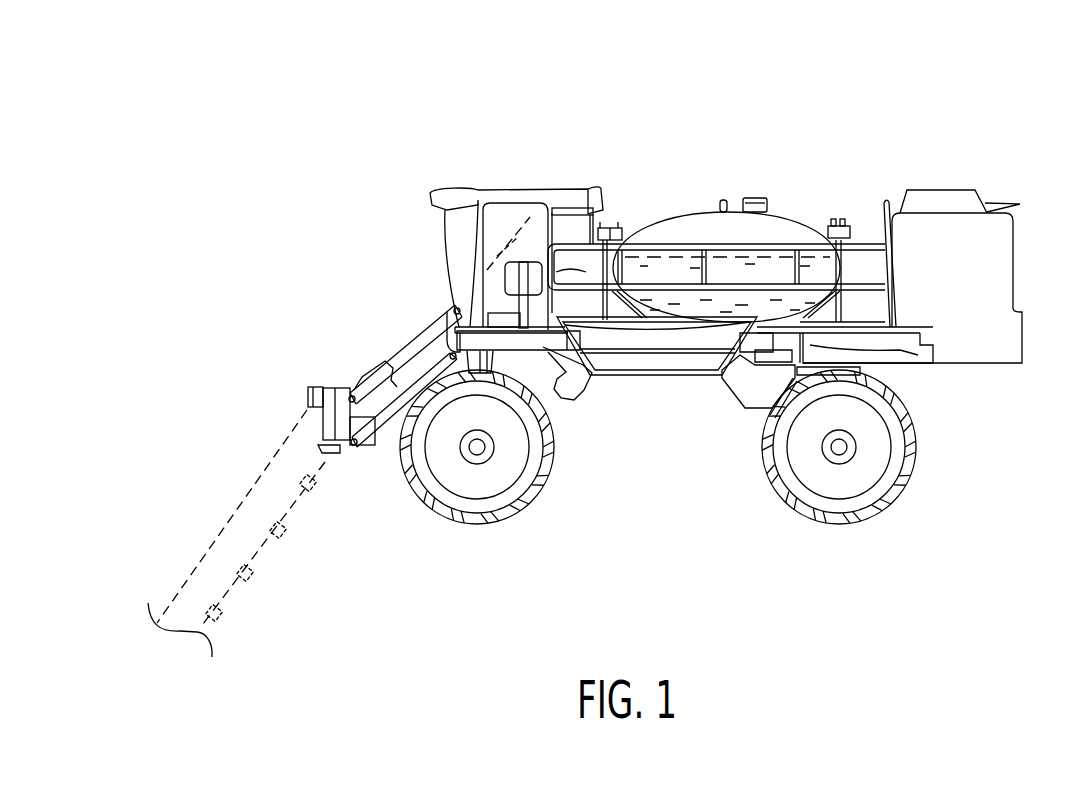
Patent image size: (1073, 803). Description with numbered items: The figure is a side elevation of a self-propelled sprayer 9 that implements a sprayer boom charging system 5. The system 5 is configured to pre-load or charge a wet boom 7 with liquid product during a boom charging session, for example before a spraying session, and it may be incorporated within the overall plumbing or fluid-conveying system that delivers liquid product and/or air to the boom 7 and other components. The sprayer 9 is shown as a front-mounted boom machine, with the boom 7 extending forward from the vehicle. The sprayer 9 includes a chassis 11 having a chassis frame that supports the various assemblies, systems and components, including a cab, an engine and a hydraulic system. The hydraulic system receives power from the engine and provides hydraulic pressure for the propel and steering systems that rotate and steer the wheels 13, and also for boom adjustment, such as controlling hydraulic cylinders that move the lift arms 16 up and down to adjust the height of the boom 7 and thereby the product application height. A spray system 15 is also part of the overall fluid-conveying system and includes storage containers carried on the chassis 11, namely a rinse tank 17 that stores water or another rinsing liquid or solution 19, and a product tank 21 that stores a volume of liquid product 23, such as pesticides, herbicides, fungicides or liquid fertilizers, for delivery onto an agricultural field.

The self-propelled sprayer 9 is at (771, 82).
The sprayer boom charging system 5 is at (280, 375).
The wet boom 7 is at (181, 531).
The chassis 11 is at (676, 384).
The wheels 13 is at (514, 512).
The spray system 15 is at (805, 201).
The lift arms 16 is at (377, 366).
The rinse tank 17 is at (844, 220).
The rinsing liquid 19 is at (863, 248).
The product tank 21 is at (688, 205).
The liquid product 23 is at (655, 265).